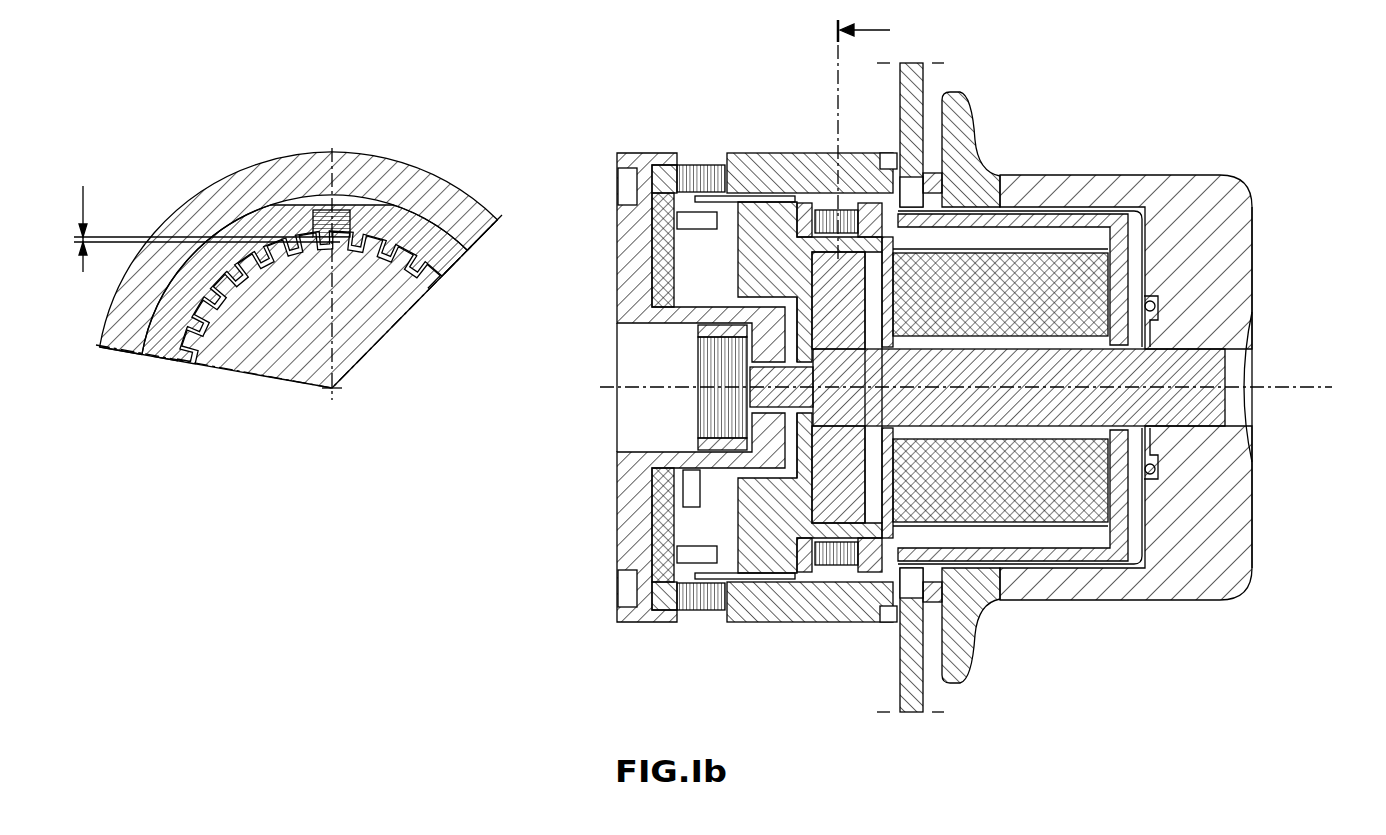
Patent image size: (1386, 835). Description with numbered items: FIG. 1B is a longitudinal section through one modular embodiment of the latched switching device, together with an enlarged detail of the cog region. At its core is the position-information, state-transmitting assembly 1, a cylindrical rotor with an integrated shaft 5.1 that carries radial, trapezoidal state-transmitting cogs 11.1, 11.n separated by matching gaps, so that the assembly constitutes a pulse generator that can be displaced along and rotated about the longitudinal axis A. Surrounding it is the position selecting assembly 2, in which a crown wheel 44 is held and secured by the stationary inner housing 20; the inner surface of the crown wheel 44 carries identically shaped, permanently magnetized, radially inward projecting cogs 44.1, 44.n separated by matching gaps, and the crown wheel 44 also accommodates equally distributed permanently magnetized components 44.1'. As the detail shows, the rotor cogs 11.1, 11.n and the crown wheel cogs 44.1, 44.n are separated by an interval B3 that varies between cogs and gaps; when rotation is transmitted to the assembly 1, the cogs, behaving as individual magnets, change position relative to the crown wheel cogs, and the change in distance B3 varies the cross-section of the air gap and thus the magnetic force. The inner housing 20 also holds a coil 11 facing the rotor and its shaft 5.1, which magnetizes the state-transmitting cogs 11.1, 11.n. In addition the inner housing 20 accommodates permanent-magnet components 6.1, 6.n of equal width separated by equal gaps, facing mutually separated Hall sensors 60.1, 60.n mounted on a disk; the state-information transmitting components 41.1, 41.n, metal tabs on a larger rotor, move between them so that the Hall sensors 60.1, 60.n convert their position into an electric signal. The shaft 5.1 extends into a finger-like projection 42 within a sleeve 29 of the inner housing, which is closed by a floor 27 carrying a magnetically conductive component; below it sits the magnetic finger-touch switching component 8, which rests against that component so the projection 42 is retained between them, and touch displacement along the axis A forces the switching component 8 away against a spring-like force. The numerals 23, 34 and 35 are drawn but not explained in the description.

The position-information, state-transmitting assembly 1 is at (862, 489).
The position selecting assembly 2 is at (886, 125).
The shaft 5.1 is at (1231, 330).
The permanent-magnet component 6.1 is at (688, 152).
The permanent-magnet component 6.n is at (662, 623).
The magnetic finger-touch switching component 8 is at (710, 420).
The coil 11 is at (1073, 278).
The state-transmitting cog 11.1 is at (211, 346).
The state-transmitting cog 11.n is at (406, 294).
The inner housing 20 is at (362, 171).
The end cap 23 is at (633, 533).
The floor 27 is at (703, 450).
The sleeve 29 is at (693, 327).
The shaft 34 is at (1242, 408).
The coil former 35 is at (1000, 228).
The state-information transmitting component 41.1 is at (714, 185).
The state-information transmitting component 41.n is at (713, 617).
The finger-like projection 42 is at (735, 287).
The crown wheel 44 is at (262, 212).
The radially inward projecting cog 44.1 is at (139, 401).
The permanently magnetized component 44.1' is at (535, 138).
The radially inward projecting cog 44.n is at (464, 232).
The Hall sensor 60.1 is at (652, 210).
The Hall sensor 60.n is at (655, 613).
The longitudinal axis A is at (1300, 387).
The interval B3 is at (63, 181).